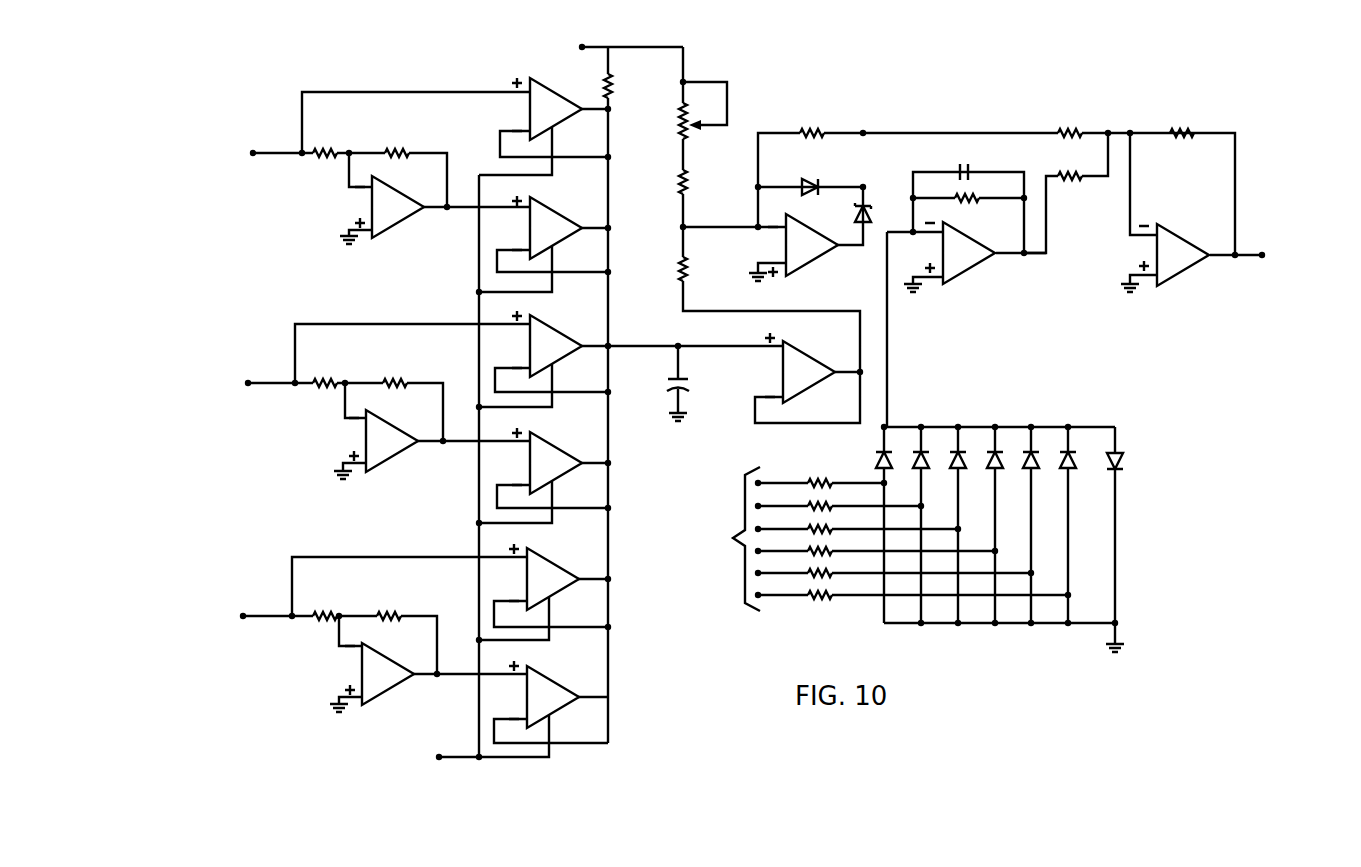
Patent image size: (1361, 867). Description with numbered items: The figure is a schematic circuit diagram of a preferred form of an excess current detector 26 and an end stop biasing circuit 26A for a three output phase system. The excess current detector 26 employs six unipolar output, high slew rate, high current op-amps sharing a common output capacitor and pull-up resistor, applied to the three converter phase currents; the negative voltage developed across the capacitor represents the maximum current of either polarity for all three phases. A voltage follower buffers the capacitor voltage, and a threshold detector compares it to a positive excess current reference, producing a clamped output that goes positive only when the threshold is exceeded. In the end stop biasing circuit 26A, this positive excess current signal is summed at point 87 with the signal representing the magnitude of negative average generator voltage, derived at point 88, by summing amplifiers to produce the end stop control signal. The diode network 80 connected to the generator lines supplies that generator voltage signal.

The excess current detector 26 is at (643, 455).
The end stop biasing circuit 26A is at (1022, 391).
The diode array / generator line sensing network 80 is at (1099, 524).
The summing point 87 is at (1108, 133).
The generator voltage signal point 88 is at (1024, 256).